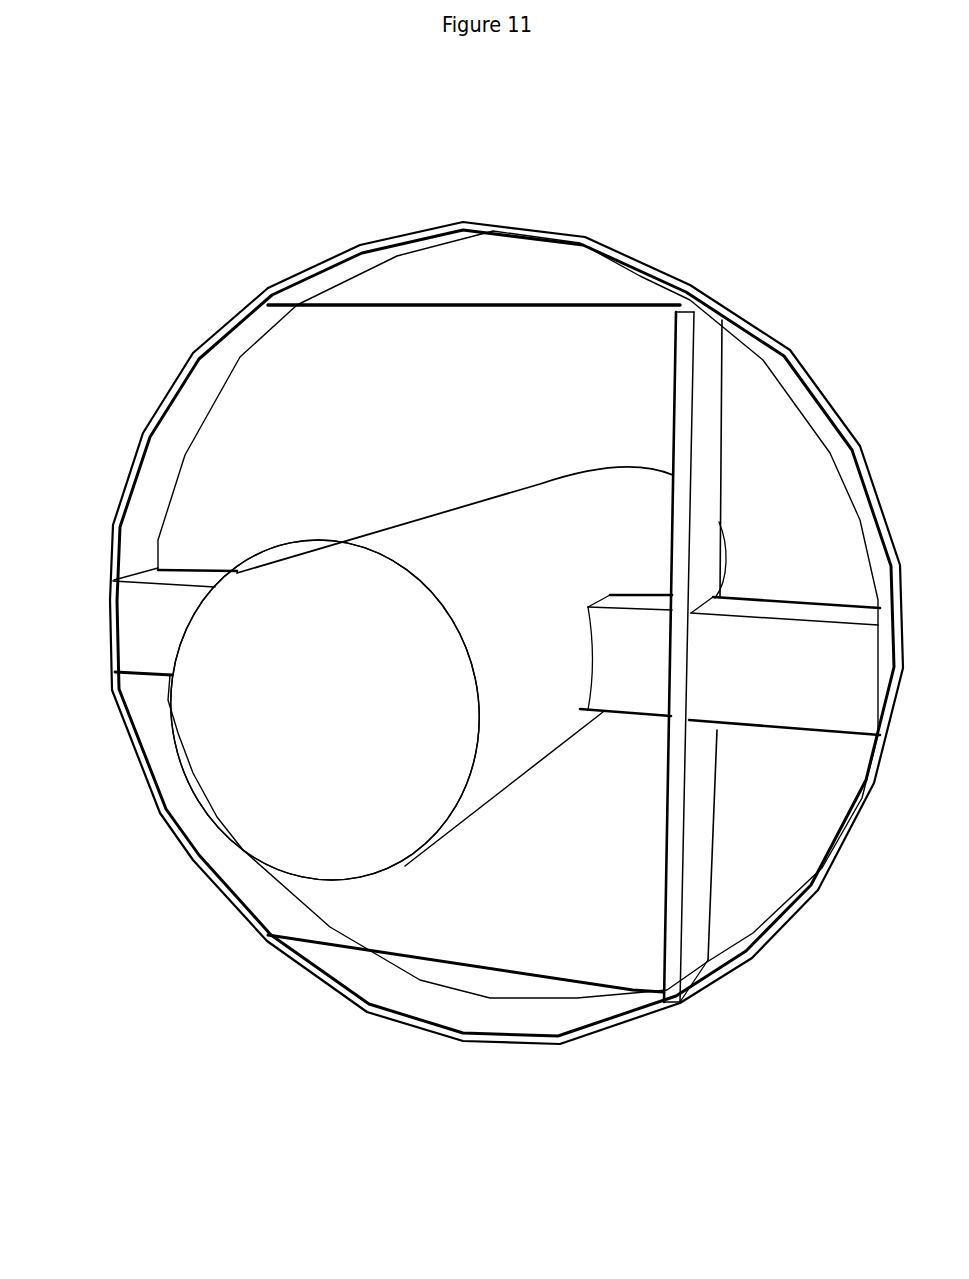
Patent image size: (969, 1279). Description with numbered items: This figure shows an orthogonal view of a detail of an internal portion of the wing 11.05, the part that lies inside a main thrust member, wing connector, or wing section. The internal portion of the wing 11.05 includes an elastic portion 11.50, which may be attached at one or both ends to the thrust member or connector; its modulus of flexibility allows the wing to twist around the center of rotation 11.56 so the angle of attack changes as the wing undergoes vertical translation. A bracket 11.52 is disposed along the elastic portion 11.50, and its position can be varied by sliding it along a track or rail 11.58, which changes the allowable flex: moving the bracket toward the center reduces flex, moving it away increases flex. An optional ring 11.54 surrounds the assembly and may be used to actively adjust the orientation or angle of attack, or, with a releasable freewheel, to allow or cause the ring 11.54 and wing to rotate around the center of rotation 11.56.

The internal portion of the wing 11.05 is at (218, 783).
The elastic portion 11.50 is at (642, 695).
The bracket 11.52 is at (675, 968).
The ring 11.54 is at (500, 1023).
The center of rotation 11.56 is at (315, 718).
The track or rail 11.58 is at (405, 300).